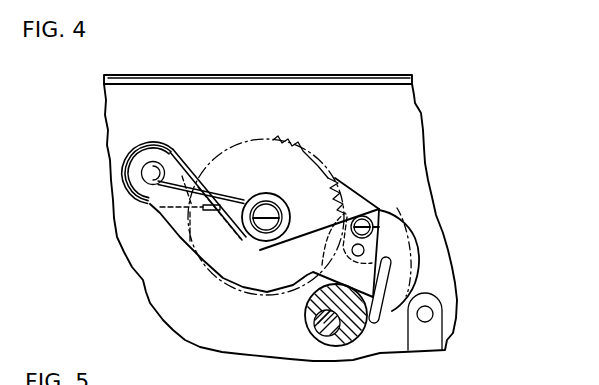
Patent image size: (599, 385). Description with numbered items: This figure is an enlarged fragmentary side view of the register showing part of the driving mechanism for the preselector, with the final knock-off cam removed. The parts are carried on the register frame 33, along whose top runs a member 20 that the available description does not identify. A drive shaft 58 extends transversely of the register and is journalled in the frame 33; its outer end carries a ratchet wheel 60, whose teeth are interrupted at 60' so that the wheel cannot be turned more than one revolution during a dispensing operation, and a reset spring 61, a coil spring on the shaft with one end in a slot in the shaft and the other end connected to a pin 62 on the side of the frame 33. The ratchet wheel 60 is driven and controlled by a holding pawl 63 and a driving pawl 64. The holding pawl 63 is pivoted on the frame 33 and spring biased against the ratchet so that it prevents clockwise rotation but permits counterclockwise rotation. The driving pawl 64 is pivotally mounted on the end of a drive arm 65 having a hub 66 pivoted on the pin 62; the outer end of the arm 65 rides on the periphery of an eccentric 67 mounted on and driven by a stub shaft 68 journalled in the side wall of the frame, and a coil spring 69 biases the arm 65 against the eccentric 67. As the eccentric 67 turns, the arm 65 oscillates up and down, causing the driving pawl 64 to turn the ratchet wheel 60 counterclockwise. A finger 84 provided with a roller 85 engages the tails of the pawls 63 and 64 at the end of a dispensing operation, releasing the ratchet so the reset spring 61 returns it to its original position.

The base plate 20 is at (416, 72).
The register frame 33 is at (418, 110).
The drive shaft 58 is at (266, 212).
The ratchet wheel 60 is at (266, 202).
The interruption of ratchet teeth 60' is at (307, 148).
The reset spring 61 is at (222, 194).
The pin 62 is at (153, 174).
The holding pawl 63 is at (368, 197).
The driving pawl 64 is at (345, 182).
The drive arm 65 is at (182, 232).
The hub 66 is at (144, 146).
The eccentric 67 is at (343, 348).
The stub shaft 68 is at (315, 322).
The coil spring 69 is at (178, 162).
The finger 84 is at (437, 333).
The roller 85 is at (431, 311).